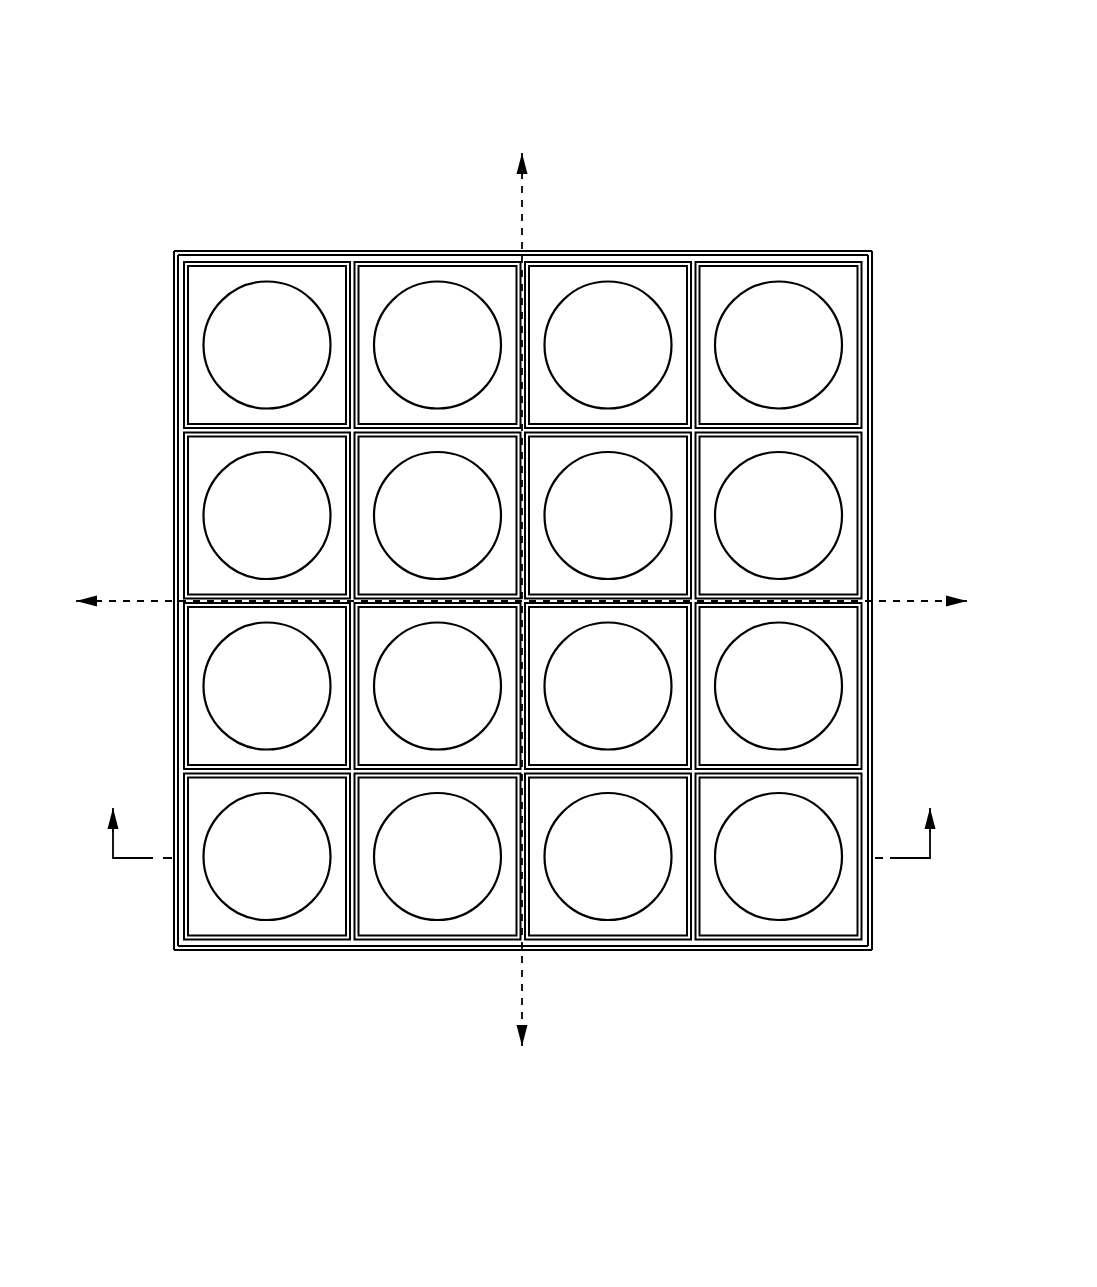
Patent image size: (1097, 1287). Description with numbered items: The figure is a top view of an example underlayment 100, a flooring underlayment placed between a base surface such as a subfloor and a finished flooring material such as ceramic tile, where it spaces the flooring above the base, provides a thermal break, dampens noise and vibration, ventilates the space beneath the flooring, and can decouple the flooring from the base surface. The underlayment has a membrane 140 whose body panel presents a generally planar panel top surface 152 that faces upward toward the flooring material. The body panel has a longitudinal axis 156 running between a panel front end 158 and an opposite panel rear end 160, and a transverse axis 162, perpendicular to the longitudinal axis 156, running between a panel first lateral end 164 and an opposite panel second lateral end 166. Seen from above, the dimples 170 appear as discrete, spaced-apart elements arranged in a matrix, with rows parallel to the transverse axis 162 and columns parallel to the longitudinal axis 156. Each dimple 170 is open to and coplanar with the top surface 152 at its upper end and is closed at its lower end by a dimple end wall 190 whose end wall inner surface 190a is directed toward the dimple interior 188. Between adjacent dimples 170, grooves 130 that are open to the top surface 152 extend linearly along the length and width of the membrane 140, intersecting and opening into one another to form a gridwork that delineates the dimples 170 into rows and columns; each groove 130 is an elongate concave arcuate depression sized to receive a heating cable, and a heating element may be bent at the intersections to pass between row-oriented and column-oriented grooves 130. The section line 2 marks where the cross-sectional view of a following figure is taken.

The underlayment 100 is at (186, 102).
The grooves 130 is at (866, 331).
The membrane 140 is at (670, 287).
The panel top surface 152 is at (342, 762).
The longitudinal axis 156 is at (523, 225).
The panel front end 158 is at (451, 173).
The panel rear end 160 is at (753, 970).
The transverse axis 162 is at (147, 601).
The panel first lateral end 164 is at (157, 428).
The panel second lateral end 166 is at (884, 679).
The dimples 170 is at (257, 530).
The dimple interior 188 is at (226, 342).
The dimple end wall 190 is at (260, 310).
The end wall inner surface 190a is at (298, 389).
The section line 2- 2 is at (524, 833).